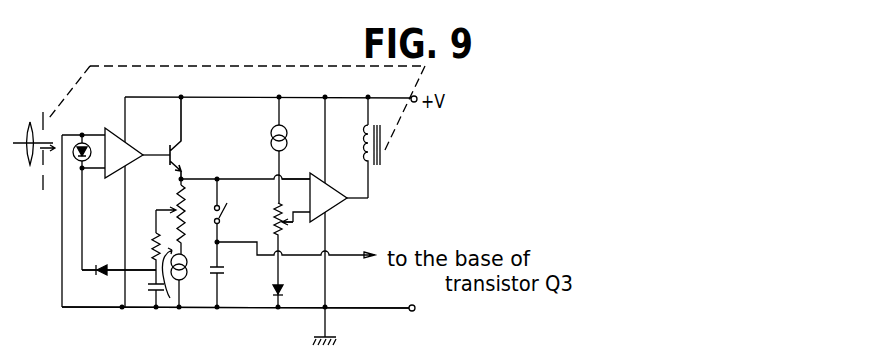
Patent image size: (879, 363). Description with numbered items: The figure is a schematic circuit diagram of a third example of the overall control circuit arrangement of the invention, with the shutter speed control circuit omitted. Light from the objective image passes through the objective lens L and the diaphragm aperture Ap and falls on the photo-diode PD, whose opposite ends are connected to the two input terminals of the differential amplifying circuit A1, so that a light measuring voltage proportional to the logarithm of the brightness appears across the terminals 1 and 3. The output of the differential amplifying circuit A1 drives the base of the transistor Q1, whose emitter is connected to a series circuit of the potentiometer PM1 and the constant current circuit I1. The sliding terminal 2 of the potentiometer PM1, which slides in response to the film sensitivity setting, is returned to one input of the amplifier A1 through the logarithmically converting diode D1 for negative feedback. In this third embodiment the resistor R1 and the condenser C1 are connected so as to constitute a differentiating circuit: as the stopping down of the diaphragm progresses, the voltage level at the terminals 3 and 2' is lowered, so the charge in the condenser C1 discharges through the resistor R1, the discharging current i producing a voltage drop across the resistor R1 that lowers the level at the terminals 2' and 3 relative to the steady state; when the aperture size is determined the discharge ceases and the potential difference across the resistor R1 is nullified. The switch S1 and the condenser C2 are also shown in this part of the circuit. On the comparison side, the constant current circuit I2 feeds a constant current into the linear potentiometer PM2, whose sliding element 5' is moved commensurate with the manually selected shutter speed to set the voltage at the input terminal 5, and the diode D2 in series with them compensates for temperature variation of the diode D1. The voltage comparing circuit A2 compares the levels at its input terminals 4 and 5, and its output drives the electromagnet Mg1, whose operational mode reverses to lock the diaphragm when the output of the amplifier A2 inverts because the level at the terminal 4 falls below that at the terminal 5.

The terminal 1 is at (197, 308).
The sliding terminal of potentiometer PM1 2 is at (119, 253).
The terminal 2' is at (144, 212).
The terminal 3 is at (212, 178).
The input terminal 4 is at (304, 179).
The input terminal 5 is at (301, 203).
The sliding element of potentiometer PM2 5' is at (293, 235).
The objective lens L is at (34, 157).
The diaphragm aperture Ap is at (47, 160).
The photo-diode PD is at (83, 210).
The differential amplifying circuit A1 is at (137, 153).
The transistor Q1 is at (186, 138).
The potentiometer PM1 is at (161, 210).
The resistor R1 is at (144, 258).
The discharging current i is at (167, 262).
The constant current circuit I1 is at (187, 279).
The logarithmically converting diode D1 is at (119, 283).
The condenser C1 is at (146, 291).
The switch S1 is at (230, 210).
The condenser C2 is at (230, 274).
The constant current circuit I2 is at (289, 150).
The potentiometer PM2 is at (263, 229).
The diode D2 is at (291, 281).
The voltage comparing circuit A2 is at (339, 197).
The electromagnet Mg1 is at (391, 147).